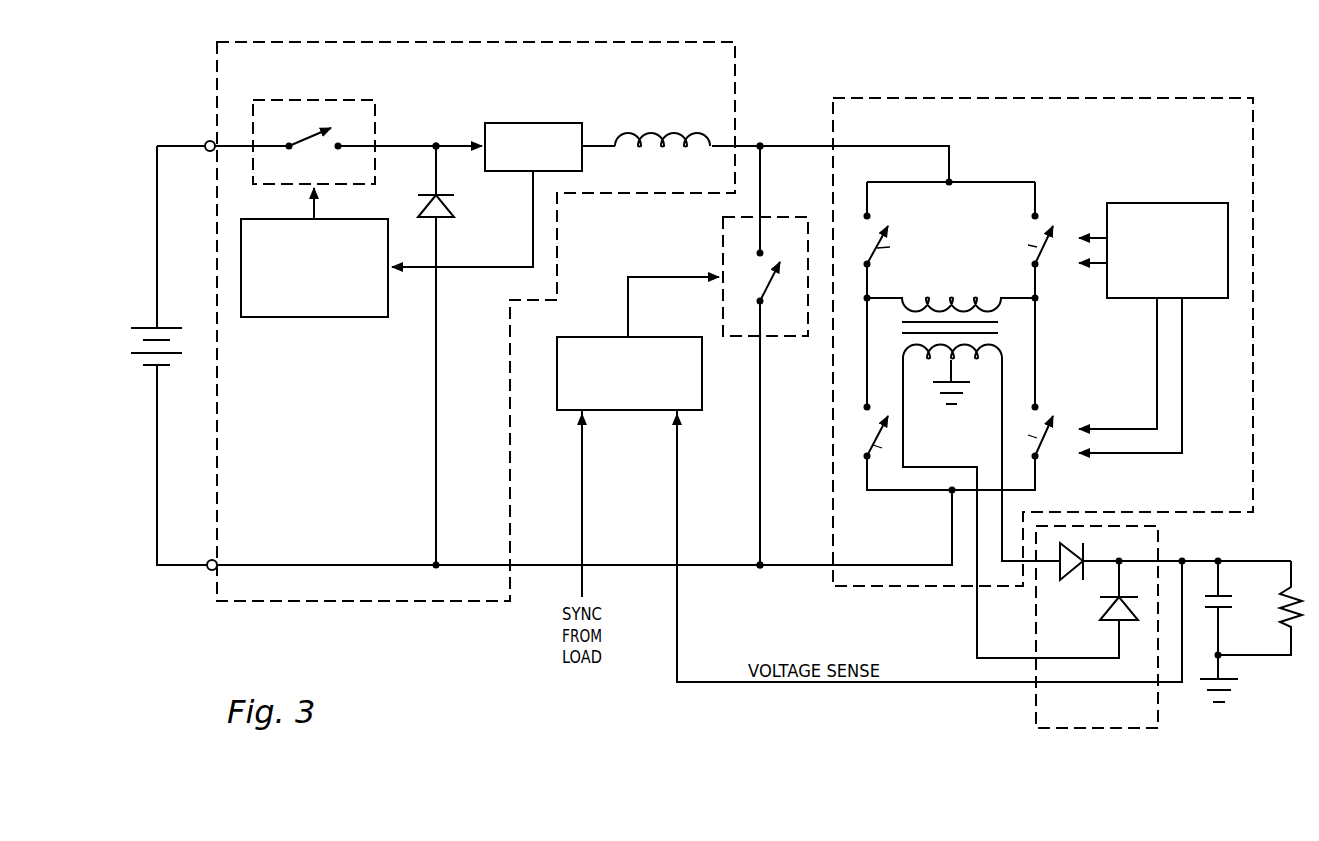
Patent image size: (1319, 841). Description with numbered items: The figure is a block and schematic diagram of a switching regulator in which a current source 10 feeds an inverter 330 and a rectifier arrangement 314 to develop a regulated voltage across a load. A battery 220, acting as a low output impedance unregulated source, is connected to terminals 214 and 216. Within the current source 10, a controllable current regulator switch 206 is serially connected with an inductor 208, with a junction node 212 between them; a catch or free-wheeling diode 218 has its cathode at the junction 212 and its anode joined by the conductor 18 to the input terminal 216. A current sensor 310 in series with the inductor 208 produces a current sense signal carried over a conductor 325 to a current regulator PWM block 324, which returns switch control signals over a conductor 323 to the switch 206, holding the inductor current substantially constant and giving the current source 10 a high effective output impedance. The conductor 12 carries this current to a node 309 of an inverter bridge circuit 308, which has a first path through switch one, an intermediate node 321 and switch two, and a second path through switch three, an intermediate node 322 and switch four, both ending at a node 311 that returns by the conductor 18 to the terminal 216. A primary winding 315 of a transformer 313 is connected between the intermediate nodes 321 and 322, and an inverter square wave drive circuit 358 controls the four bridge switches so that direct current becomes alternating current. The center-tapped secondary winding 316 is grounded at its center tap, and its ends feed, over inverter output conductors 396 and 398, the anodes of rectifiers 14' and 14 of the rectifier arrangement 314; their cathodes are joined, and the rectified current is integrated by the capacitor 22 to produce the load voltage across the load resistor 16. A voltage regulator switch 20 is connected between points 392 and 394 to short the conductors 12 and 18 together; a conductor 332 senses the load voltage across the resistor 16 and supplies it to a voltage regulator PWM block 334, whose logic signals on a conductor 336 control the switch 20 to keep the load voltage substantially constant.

The current source 10 is at (428, 66).
The conductor 12 is at (786, 143).
The rectifier diode 14 is at (1171, 593).
The rectifier diode 14' is at (1109, 609).
The load resistor 16 is at (1299, 605).
The conductor 18 is at (797, 562).
The voltage regulator switch 20 is at (770, 280).
The capacitor 22 is at (1227, 602).
The current regulator switch 206 is at (314, 142).
The inductor 208 is at (652, 125).
The junction node 212 is at (436, 142).
The terminal 214 is at (207, 142).
The input terminal 216 is at (207, 570).
The free-wheeling diode 218 is at (447, 205).
The battery 220 is at (152, 322).
The inverter bridge circuit 308 is at (970, 228).
The node 309 is at (951, 180).
The current sensor 310 is at (500, 123).
The node 311 is at (950, 494).
The transformer 313 is at (902, 333).
The rectifier arrangement 314 is at (1118, 718).
The primary winding 315 is at (953, 297).
The secondary winding 316 is at (985, 360).
The intermediate node 321 is at (866, 300).
The intermediate node 322 is at (1037, 298).
The conductor 323 is at (316, 204).
The current regulator PWM block 324 is at (327, 318).
The conductor 325 is at (473, 270).
The inverter circuit 330 is at (1008, 127).
The conductor 332 is at (679, 590).
The voltage regulator PWM block 334 is at (627, 412).
The conductor 336 is at (630, 312).
The inverter square wave drive circuit 358 is at (1200, 203).
The point 392 is at (757, 562).
The point 394 is at (763, 148).
The inverter output conductor 396 is at (975, 622).
The inverter output conductor 398 is at (1003, 508).